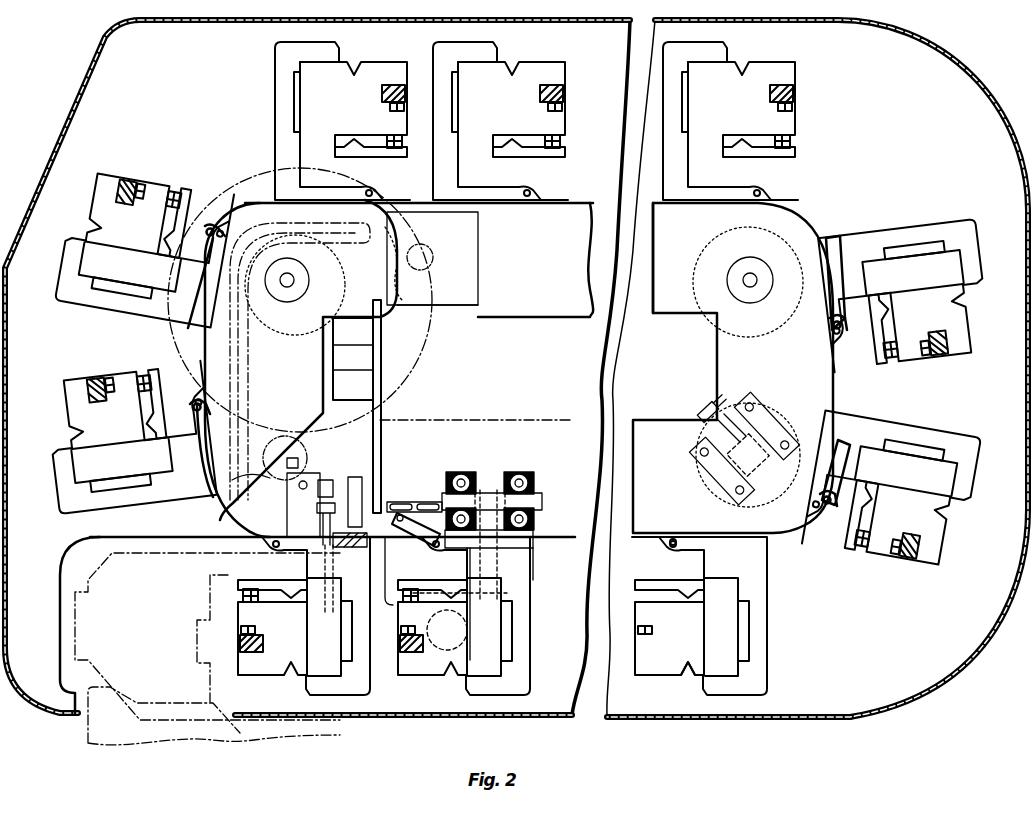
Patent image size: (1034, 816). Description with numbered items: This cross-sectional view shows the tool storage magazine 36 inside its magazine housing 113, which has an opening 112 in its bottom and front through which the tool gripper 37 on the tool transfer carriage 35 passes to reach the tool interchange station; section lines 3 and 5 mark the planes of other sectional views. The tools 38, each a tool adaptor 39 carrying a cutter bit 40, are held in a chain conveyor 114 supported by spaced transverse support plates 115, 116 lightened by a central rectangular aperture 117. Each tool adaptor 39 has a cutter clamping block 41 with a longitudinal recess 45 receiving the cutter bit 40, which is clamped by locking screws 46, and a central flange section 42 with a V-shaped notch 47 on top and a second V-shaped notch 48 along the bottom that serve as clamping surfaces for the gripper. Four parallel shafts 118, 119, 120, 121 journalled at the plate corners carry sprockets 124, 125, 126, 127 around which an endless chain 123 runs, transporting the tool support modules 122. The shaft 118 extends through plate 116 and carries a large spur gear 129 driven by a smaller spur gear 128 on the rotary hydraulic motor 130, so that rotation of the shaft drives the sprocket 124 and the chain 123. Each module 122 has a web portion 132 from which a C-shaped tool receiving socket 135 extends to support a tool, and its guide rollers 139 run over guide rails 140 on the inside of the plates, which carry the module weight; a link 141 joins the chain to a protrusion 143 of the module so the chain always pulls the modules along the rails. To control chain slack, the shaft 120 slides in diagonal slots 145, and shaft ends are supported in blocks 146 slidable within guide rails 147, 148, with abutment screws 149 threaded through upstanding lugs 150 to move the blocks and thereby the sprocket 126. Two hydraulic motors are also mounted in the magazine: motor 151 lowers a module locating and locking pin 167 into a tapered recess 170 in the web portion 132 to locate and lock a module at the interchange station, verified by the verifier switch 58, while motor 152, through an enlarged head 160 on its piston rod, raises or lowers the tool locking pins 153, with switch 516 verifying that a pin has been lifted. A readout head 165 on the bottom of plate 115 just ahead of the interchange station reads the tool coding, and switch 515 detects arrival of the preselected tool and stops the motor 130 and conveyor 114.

The section line 3 is at (246, 181).
The section line 5 is at (35, 590).
The tool transfer carriage 35 is at (80, 755).
The tool storage magazine 36 is at (816, 726).
The gripper mechanism 37 is at (67, 633).
The tool 38 is at (373, 64).
The tool adaptor 39 is at (342, 106).
The cutter bit 40 is at (401, 93).
The cutter clamping block 41 is at (800, 120).
The central flange section 42 is at (952, 466).
The longitudinal recess 45 is at (402, 112).
The locking screws 46 is at (399, 142).
The V-shaped notch 47 is at (702, 582).
The V-shaped notch 48 is at (688, 668).
The verifier switch S8 58 is at (382, 332).
The opening 112 is at (72, 722).
The magazine housing 113 is at (977, 685).
The conveyor 114 is at (420, 500).
The transverse support plate 115 is at (512, 420).
The transverse support plate 116 is at (676, 320).
The central rectangular aperture 117 is at (565, 320).
The shaft 118 is at (292, 283).
The shaft 119 is at (750, 278).
The shaft 120 is at (795, 374).
The shaft 121 is at (283, 452).
The module 122 is at (859, 244).
The endless chain 123 is at (283, 356).
The sprocket 124 is at (306, 361).
The sprocket 125 is at (793, 325).
The sprocket 126 is at (705, 505).
The sprocket 127 is at (287, 377).
The smaller spur gear 128 is at (432, 256).
The large spur gear 129 is at (403, 316).
The rotary hydraulic motor 130 is at (498, 306).
The web portion 132 is at (527, 542).
The tool receiving socket 135 is at (500, 598).
The guide rollers 139 is at (490, 475).
The guide rails 140 is at (540, 503).
The link 141 is at (425, 532).
The protrusion 143 is at (688, 543).
The diagonal slots 145 is at (785, 500).
The blocks 146 is at (762, 455).
The guide rail 147 is at (790, 428).
The guide rail 148 is at (728, 500).
The abutment screws 149 is at (705, 404).
The upstanding lugs 150 is at (730, 405).
The hydraulic motor 151 is at (365, 412).
The hydraulic motor 152 is at (382, 400).
The pins 153 is at (343, 548).
The enlarged head 160 is at (326, 478).
The readout head 165 is at (401, 687).
The module locating and locking pin 167 is at (360, 490).
The tapered recess 170 is at (383, 560).
The switch S15 515 is at (245, 463).
The switch S16 516 is at (300, 312).